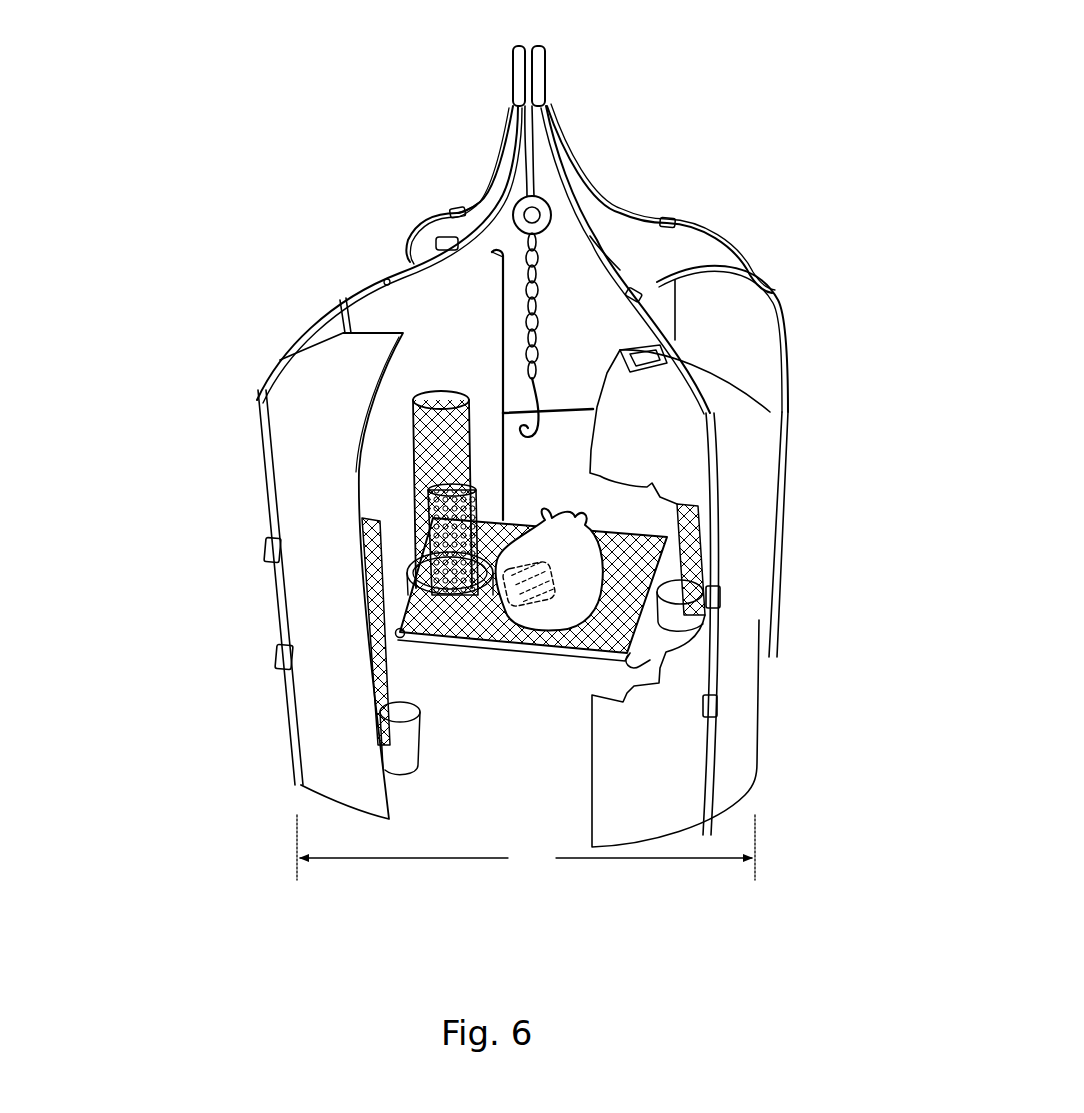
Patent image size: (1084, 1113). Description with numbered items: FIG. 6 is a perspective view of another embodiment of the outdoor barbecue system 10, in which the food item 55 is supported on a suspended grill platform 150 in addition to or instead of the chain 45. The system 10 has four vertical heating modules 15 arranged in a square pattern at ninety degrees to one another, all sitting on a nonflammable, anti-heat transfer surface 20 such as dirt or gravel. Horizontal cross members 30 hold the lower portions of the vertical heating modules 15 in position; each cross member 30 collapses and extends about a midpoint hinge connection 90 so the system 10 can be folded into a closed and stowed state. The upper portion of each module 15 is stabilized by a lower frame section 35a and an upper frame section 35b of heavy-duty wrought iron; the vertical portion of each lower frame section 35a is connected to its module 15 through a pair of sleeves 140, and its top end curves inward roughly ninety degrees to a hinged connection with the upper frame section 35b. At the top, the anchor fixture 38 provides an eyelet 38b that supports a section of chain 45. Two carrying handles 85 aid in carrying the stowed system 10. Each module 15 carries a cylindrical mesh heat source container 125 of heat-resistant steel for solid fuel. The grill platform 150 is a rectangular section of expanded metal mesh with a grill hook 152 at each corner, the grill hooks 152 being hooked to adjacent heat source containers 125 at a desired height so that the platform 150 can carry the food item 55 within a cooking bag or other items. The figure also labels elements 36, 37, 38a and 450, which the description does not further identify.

The outdoor barbecue system 10 is at (265, 845).
The vertical heating module 15 is at (495, 247).
The nonflammable, anti-heat transfer surface 20 is at (508, 770).
The horizontal cross member 30 is at (520, 410).
The lower frame section 35a is at (357, 280).
The upper frame section 35b is at (484, 214).
The fasteners 36 is at (386, 278).
The diameter d 37 is at (543, 850).
The anchor fixture 38 is at (531, 117).
The hanger rods 38a is at (541, 62).
The eyelet 38b is at (536, 165).
The chain 45 is at (522, 290).
The food item 55 is at (577, 510).
The carrying handle 85 is at (446, 238).
The midpoint hinge connection 90 is at (593, 405).
The heat source container 125 is at (410, 407).
The sleeve 140 is at (262, 548).
The suspended grill platform 150 is at (520, 655).
The grill hook 152 is at (400, 630).
The hook 450 is at (530, 373).